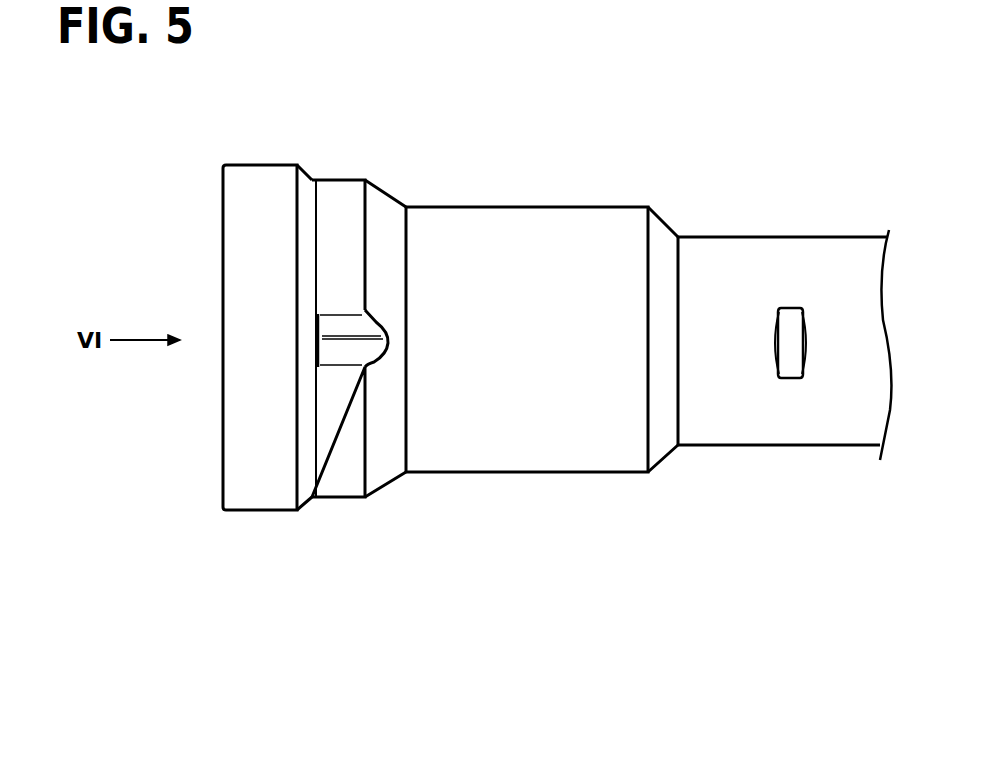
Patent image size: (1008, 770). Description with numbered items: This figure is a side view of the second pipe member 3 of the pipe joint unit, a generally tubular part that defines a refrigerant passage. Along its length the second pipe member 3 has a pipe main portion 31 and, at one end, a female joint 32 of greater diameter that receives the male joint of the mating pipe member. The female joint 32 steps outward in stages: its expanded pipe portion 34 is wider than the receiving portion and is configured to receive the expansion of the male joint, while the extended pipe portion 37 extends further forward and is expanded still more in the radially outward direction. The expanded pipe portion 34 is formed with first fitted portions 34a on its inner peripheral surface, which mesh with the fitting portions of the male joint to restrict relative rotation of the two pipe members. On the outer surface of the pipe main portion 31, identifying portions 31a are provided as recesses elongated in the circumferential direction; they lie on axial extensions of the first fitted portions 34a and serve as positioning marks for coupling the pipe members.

The second pipe member 3 is at (701, 227).
The pipe main portion 31 is at (840, 243).
The identifying portion 31a is at (792, 318).
The female joint 32 is at (505, 211).
The expanded pipe portion 34 is at (332, 185).
The first fitted portion 34a is at (360, 327).
The extended pipe portion 37 is at (257, 168).